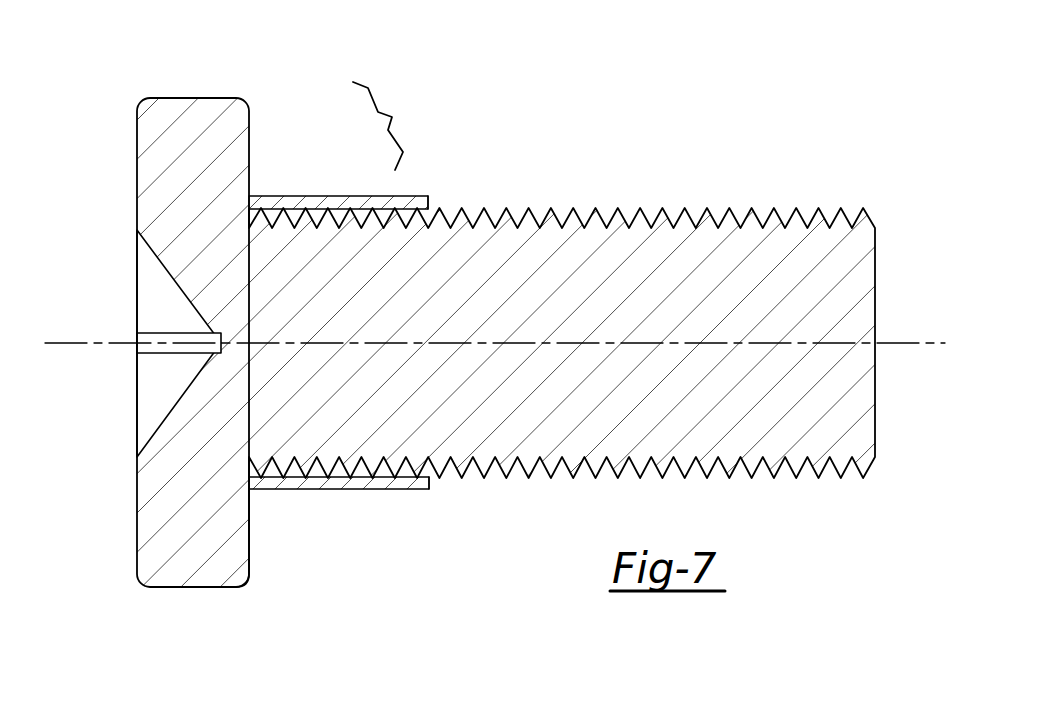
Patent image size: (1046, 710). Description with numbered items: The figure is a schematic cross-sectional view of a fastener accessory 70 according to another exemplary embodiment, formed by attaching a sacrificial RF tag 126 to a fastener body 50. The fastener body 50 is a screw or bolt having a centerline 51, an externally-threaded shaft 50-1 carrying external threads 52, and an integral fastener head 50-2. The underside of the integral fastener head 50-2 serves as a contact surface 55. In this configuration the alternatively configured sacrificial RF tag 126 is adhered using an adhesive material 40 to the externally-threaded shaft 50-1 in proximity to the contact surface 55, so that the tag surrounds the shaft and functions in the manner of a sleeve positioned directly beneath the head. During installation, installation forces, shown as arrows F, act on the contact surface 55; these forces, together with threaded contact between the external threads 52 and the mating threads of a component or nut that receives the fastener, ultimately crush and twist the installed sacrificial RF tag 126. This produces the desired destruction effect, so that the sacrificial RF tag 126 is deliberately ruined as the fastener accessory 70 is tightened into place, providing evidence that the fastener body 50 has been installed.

The fastener body 50 is at (523, 317).
The externally-threaded shaft 50-1 is at (562, 317).
The integral fastener head 50-2 is at (193, 122).
The centerline 51 is at (90, 343).
The external threads 52 is at (730, 212).
The contact surface 55 is at (258, 580).
The fastener accessory 70 is at (389, 126).
The adhesive material 40 is at (429, 476).
The sacrificial RF tag 126 is at (403, 490).
The installation forces F is at (303, 548).